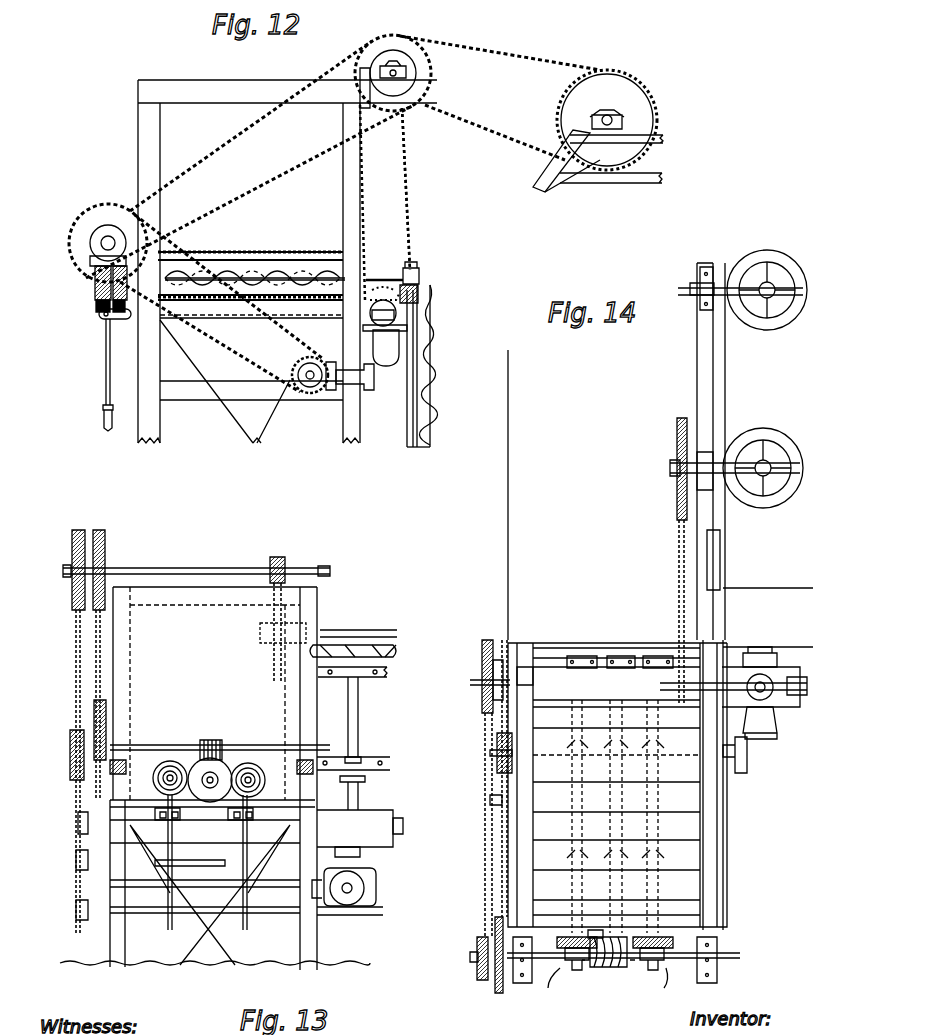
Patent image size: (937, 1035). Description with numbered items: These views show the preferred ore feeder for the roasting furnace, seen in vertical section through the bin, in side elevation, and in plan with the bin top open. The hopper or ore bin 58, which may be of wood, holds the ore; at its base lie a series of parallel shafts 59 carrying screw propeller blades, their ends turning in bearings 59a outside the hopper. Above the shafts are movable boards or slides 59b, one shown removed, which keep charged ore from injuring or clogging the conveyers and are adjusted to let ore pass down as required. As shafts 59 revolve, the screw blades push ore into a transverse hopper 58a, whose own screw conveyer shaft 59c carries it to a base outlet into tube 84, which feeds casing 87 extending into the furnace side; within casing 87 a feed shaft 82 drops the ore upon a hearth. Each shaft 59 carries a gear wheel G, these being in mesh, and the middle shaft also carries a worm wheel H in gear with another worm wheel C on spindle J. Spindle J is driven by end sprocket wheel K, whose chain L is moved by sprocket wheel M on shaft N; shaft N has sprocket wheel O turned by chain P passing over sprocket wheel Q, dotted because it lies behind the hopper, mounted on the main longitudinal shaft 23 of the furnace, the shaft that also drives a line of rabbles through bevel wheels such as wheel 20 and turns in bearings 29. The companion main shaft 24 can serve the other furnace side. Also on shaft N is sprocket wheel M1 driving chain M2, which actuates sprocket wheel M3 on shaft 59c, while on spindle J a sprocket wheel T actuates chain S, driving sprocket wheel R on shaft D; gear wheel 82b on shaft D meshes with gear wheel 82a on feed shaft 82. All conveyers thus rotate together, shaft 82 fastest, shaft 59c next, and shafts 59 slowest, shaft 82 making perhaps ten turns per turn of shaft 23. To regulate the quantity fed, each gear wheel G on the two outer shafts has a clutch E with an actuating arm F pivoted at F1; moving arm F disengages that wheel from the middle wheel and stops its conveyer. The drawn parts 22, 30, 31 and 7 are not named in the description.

In FIG. 12, the hopper or ore bin 58 is at (287, 261).
In FIG. 13, the hopper or ore bin 58 is at (215, 778).
In FIG. 14, the hopper or ore bin 58 is at (718, 832).
In FIG. 12, the transverse hopper 58a is at (420, 292).
In FIG. 13, the transverse hopper 58a is at (360, 828).
In FIG. 14, the transverse hopper 58a is at (640, 652).
In FIG. 12, the shafts 59 is at (213, 292).
In FIG. 14, the shafts 59 is at (658, 884).
In FIG. 12, the bearings 59a is at (420, 272).
In FIG. 14, the bearings 59a is at (590, 652).
In FIG. 12, the movable boards or slides 59b is at (258, 238).
In FIG. 14, the movable boards or slides 59b is at (617, 816).
In FIG. 12, the screw conveyer shaft 59c is at (388, 300).
In FIG. 13, the screw conveyer shaft 59c is at (397, 840).
In FIG. 14, the screw conveyer shaft 59c is at (806, 690).
In FIG. 13, the bevel wheel 20 is at (398, 650).
In FIG. 14, the bevel wheel 20 is at (769, 423).
In FIG. 12, the bar 22 is at (533, 196).
In FIG. 13, the bar 22 is at (390, 675).
In FIG. 14, the bar 22 is at (735, 550).
In FIG. 12, the main longitudinal shaft 23 is at (602, 112).
In FIG. 13, the main longitudinal shaft 23 is at (370, 628).
In FIG. 14, the main longitudinal shaft 23 is at (786, 480).
In FIG. 14, the main longitudinal shaft 24 is at (691, 276).
In FIG. 14, the bearings 29 is at (698, 300).
In FIG. 13, the shaft 30 is at (360, 690).
In FIG. 13, the cross bar 31 is at (362, 760).
In FIG. 13, the support bar 7 is at (368, 780).
In FIG. 13, the feed shaft 82 is at (350, 893).
In FIG. 12, the gear wheel 82a is at (332, 392).
In FIG. 13, the gear wheel 82a is at (340, 903).
In FIG. 14, the gear wheel 82a is at (772, 740).
In FIG. 14, the gear wheel 82b is at (745, 776).
In FIG. 12, the tube 84 is at (384, 368).
In FIG. 13, the tube 84 is at (368, 862).
In FIG. 12, the casing 87 is at (392, 420).
In FIG. 14, the casing 87 is at (760, 650).
In FIG. 12, the end sprocket wheel K is at (103, 230).
In FIG. 13, the end sprocket wheel K is at (66, 775).
In FIG. 14, the end sprocket wheel K is at (455, 1034).
In FIG. 12, the chain L is at (260, 130).
In FIG. 13, the chain L is at (76, 652).
In FIG. 14, the chain L is at (478, 862).
In FIG. 13, the sprocket wheel M is at (72, 530).
In FIG. 14, the sprocket wheel M is at (482, 707).
In FIG. 12, the sprocket wheel M1 is at (416, 78).
In FIG. 13, the sprocket wheel M1 is at (107, 550).
In FIG. 12, the chain M2 is at (414, 180).
In FIG. 13, the chain M2 is at (100, 528).
In FIG. 14, the chain M2 is at (510, 635).
In FIG. 12, the sprocket wheel M3 is at (425, 300).
In FIG. 13, the sprocket wheel M3 is at (76, 826).
In FIG. 13, the shaft N is at (332, 571).
In FIG. 14, the shaft N is at (478, 685).
In FIG. 12, the sprocket wheel O is at (432, 96).
In FIG. 13, the sprocket wheel O is at (270, 560).
In FIG. 12, the chain P is at (500, 99).
In FIG. 13, the chain P is at (284, 548).
In FIG. 14, the chain P is at (677, 590).
In FIG. 12, the sprocket wheel Q is at (596, 120).
In FIG. 13, the sprocket wheel Q is at (272, 665).
In FIG. 14, the sprocket wheel Q is at (676, 505).
In FIG. 12, the sprocket wheel R is at (302, 352).
In FIG. 13, the sprocket wheel R is at (74, 915).
In FIG. 14, the sprocket wheel R is at (492, 744).
In FIG. 12, the chain S is at (251, 355).
In FIG. 13, the chain S is at (74, 864).
In FIG. 14, the chain S is at (482, 805).
In FIG. 12, the sprocket wheel T is at (95, 275).
In FIG. 13, the sprocket wheel T is at (102, 713).
In FIG. 14, the sprocket wheel T is at (505, 990).
In FIG. 12, the gear wheel G is at (120, 312).
In FIG. 13, the gear wheel G is at (276, 768).
In FIG. 14, the gear wheel G is at (682, 980).
In FIG. 12, the worm wheel H is at (98, 314).
In FIG. 13, the worm wheel H is at (210, 800).
In FIG. 14, the worm wheel H is at (633, 970).
In FIG. 12, the actuating arm F is at (104, 390).
In FIG. 13, the actuating arm F is at (246, 930).
In FIG. 13, the pivot F1 is at (212, 826).
In FIG. 12, the shaft D is at (308, 380).
In FIG. 13, the shaft D is at (190, 869).
In FIG. 14, the shaft D is at (492, 756).
In FIG. 13, the spindle J is at (173, 748).
In FIG. 14, the spindle J is at (580, 960).
In FIG. 13, the worm wheel C is at (213, 748).
In FIG. 14, the worm wheel C is at (612, 970).
In FIG. 13, the clutch E is at (250, 760).
In FIG. 14, the clutch E is at (606, 968).